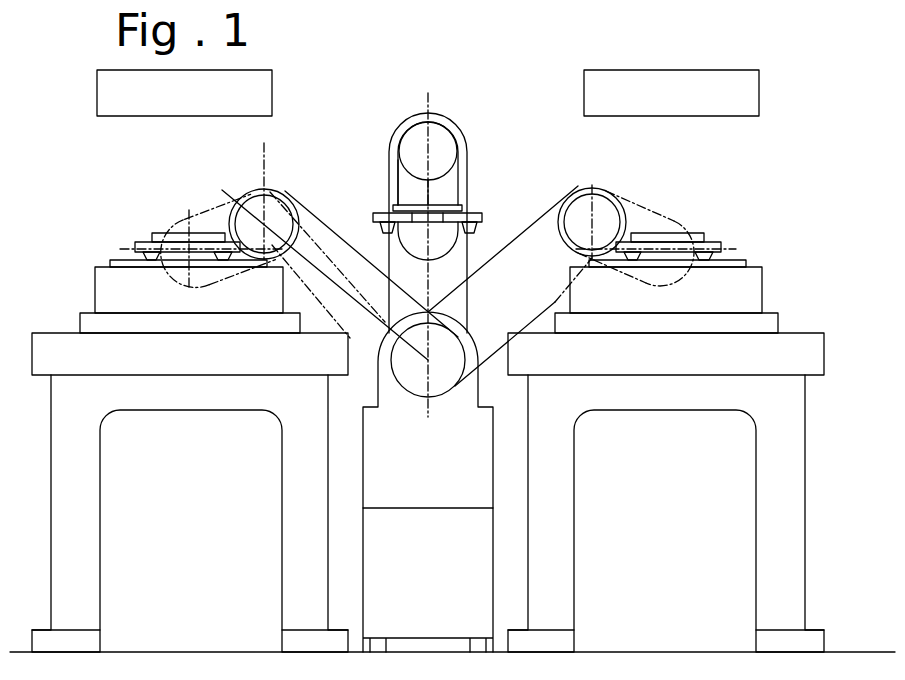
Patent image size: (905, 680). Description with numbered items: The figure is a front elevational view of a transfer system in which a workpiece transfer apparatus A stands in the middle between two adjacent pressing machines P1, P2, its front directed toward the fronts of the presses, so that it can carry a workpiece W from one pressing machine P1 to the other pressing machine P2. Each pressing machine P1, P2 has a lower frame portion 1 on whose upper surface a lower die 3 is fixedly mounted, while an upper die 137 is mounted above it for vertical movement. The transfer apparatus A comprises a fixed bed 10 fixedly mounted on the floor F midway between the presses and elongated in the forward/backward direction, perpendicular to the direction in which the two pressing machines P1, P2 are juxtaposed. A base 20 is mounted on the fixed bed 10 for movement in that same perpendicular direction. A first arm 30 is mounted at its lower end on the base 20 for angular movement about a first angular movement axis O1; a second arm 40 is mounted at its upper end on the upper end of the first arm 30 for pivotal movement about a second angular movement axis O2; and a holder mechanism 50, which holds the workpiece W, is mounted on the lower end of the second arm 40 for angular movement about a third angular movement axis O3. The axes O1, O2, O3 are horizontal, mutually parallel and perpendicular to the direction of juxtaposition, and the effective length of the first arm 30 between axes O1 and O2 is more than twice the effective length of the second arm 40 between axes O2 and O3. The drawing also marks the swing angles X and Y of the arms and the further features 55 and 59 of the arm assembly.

The lower frame portion 1 is at (63, 408).
The lower die 3 is at (97, 290).
The fixed bed 10 is at (493, 587).
The base 20 is at (493, 463).
The first arm 30 is at (467, 300).
The second arm 40 is at (447, 182).
The holder mechanism 50 is at (409, 196).
The drive belt 55 is at (437, 199).
The clamp plates 59 is at (150, 270).
The upper die 137 is at (113, 118).
The workpiece W is at (118, 257).
The workpiece transfer apparatus A is at (471, 141).
The floor F is at (650, 651).
The pressing machine P1 is at (45, 330).
The pressing machine P2 is at (805, 330).
The first angular movement axis O1 is at (427, 363).
The second angular movement axis O2 is at (428, 150).
The third angular movement axis O3 is at (428, 232).
The swing angle X is at (428, 270).
The swing angle Y is at (264, 154).